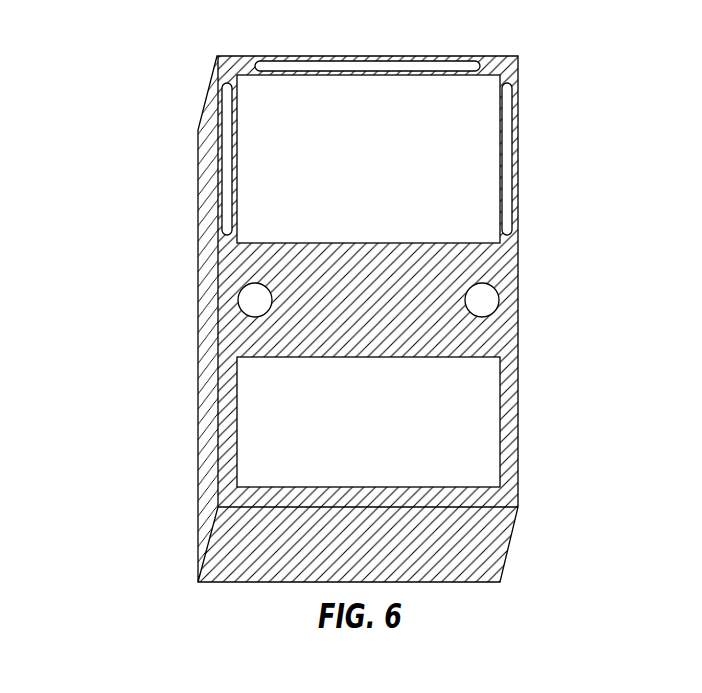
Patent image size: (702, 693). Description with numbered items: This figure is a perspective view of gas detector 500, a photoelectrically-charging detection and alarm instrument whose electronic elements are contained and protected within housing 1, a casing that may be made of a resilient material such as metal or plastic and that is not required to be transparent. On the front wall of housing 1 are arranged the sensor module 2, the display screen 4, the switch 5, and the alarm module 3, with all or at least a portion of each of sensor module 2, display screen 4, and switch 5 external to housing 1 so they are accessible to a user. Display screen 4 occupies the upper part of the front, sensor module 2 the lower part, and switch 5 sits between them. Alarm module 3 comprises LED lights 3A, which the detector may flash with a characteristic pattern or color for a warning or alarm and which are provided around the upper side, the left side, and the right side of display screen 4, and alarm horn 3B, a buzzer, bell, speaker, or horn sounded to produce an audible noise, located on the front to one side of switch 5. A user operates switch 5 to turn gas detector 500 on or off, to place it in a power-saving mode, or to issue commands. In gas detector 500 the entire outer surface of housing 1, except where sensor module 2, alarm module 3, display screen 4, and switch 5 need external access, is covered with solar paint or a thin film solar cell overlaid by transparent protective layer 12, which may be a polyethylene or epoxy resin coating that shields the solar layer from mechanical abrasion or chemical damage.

The gas detector 500 is at (93, 114).
The housing 1 is at (415, 556).
The sensor module 2 is at (467, 433).
The alarm module 3 is at (150, 128).
The LED light 3A is at (228, 167).
The alarm horn 3B is at (253, 298).
The display screen 4 is at (465, 170).
The switch 5 is at (483, 299).
The transparent protective layer 12 is at (205, 385).